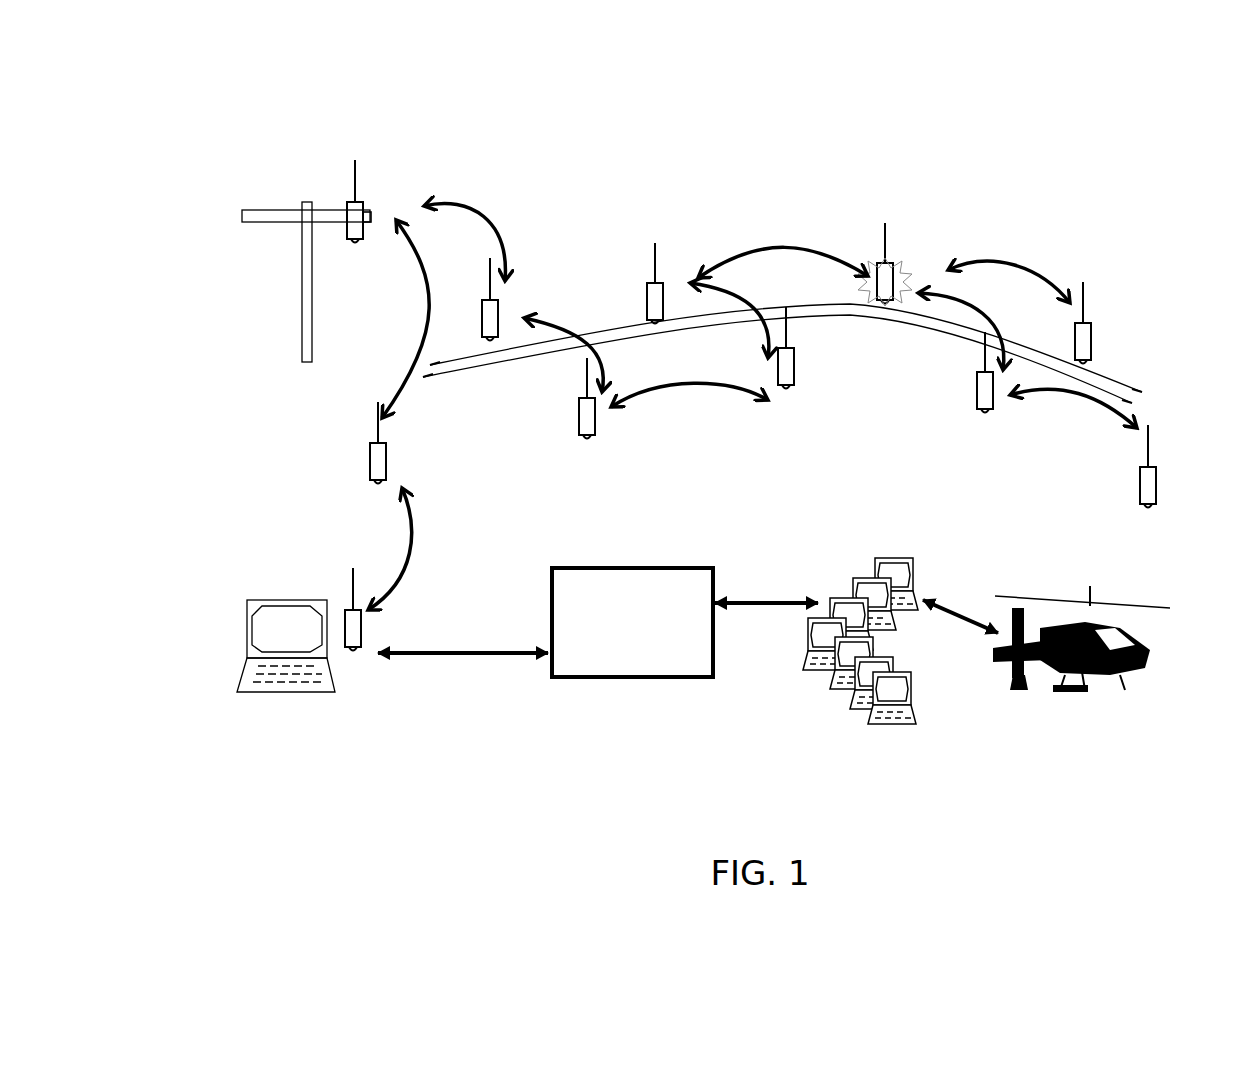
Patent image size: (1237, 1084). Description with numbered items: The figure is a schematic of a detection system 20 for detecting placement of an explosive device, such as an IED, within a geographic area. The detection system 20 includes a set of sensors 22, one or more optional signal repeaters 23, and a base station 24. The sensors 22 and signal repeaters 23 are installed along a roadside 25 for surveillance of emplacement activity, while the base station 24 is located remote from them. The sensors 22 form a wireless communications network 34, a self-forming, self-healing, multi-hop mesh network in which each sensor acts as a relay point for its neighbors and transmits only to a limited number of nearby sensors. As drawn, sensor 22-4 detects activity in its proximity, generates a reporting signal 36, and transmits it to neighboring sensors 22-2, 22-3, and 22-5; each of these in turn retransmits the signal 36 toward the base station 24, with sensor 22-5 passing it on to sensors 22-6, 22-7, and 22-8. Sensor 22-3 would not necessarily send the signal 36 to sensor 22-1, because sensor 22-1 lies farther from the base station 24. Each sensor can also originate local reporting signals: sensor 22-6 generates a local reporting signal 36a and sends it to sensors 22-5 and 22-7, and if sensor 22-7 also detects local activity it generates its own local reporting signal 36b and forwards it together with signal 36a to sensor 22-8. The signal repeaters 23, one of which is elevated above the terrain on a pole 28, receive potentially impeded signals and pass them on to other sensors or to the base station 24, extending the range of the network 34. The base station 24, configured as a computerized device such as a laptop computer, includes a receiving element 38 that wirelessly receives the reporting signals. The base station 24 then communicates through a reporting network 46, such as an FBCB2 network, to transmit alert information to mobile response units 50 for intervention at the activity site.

The detection system 20 is at (1082, 118).
The sensors 22 is at (1110, 228).
The sensor 22-1 is at (1160, 457).
The sensor 22-2 is at (1097, 337).
The sensor 22-3 is at (985, 415).
The sensor 22-4 is at (900, 268).
The sensor 22-5 is at (660, 280).
The sensor 22-6 is at (790, 390).
The sensor 22-7 is at (587, 445).
The sensor 22-8 is at (492, 347).
The signal repeater 23 is at (365, 202).
The base station 24 is at (233, 710).
The roadside 25 is at (625, 333).
The pole 28 is at (300, 340).
The wireless communications network 34 is at (875, 192).
The reporting signal 36 is at (748, 255).
The local reporting signal 36a is at (747, 293).
The local reporting signal 36b is at (587, 343).
The receiving element 38 is at (355, 655).
The reporting network 46 is at (740, 695).
The mobile response units 50 is at (1010, 697).